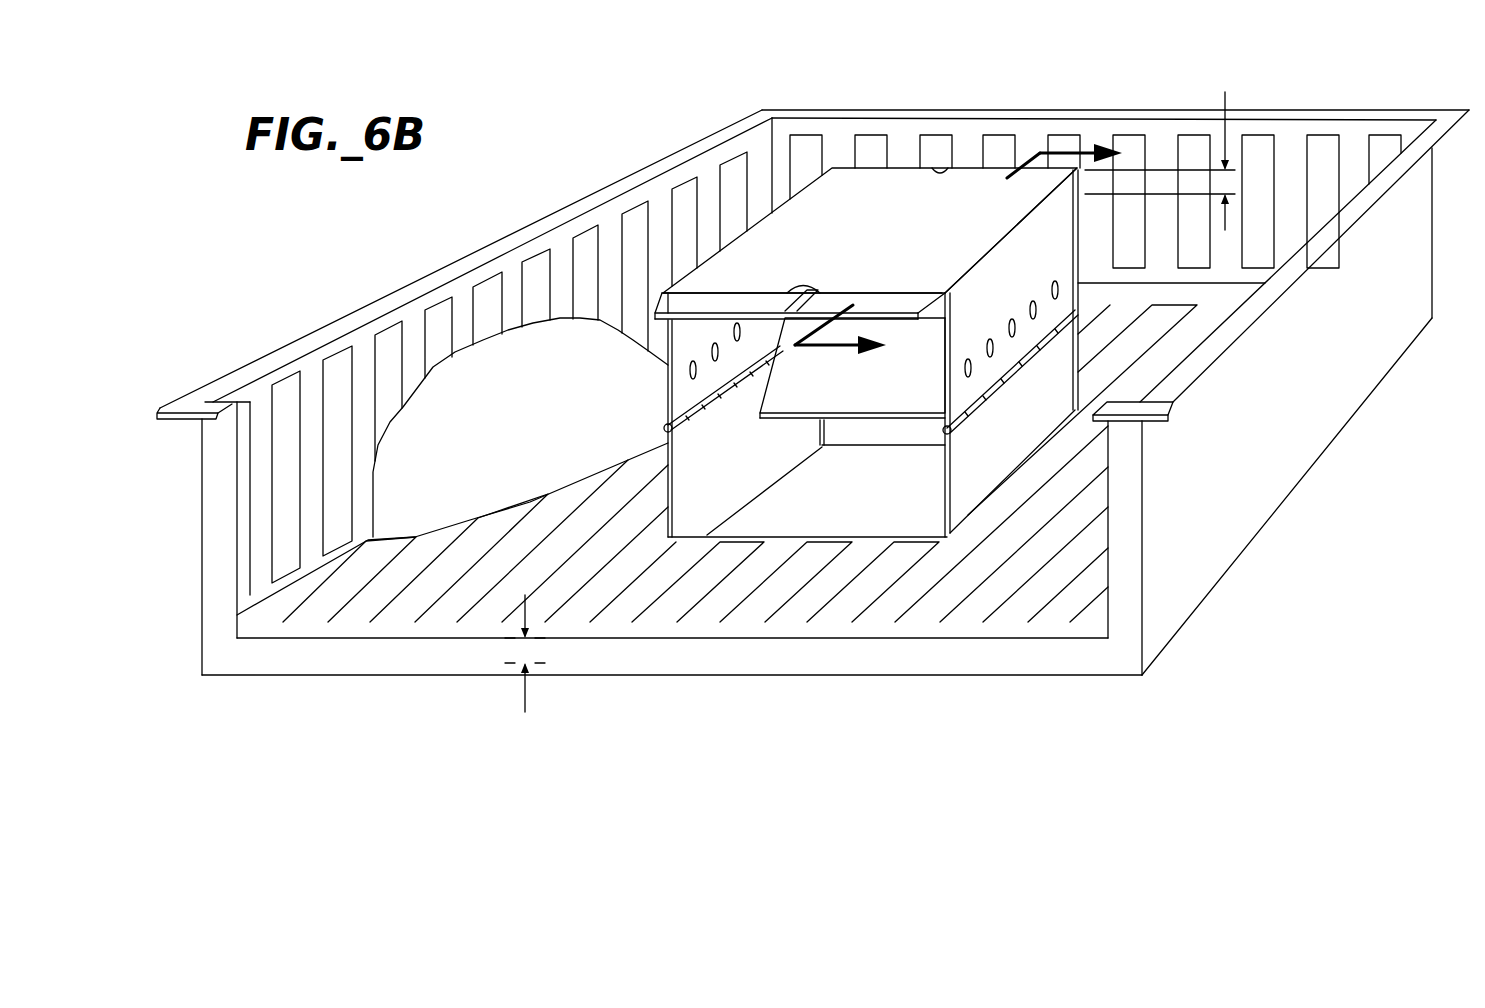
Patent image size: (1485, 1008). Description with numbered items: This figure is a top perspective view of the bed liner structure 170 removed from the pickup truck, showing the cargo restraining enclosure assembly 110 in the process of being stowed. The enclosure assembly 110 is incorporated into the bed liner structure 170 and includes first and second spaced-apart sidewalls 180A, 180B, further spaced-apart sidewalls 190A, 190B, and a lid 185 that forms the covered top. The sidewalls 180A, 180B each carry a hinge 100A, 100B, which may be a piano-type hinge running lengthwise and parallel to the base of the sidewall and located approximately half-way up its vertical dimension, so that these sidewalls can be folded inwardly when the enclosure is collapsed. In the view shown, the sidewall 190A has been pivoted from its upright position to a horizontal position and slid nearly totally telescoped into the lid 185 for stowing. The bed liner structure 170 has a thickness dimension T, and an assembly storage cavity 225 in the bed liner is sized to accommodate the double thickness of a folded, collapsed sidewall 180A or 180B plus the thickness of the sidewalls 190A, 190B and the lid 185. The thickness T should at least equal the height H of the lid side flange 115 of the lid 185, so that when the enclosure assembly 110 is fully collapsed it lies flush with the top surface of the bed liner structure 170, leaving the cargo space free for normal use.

The enclosure assembly 110 is at (1003, 62).
The bed liner structure 170 is at (1021, 656).
The assembly storage cavity 225 is at (840, 503).
The lid 185 is at (915, 216).
The lid side flange 115 is at (1017, 233).
The sidewall 190A is at (712, 308).
The sidewall 190B is at (870, 397).
The sidewall 180A is at (660, 428).
The sidewall 180B is at (1040, 437).
The hinge 100A is at (690, 423).
The hinge 100B is at (1003, 368).